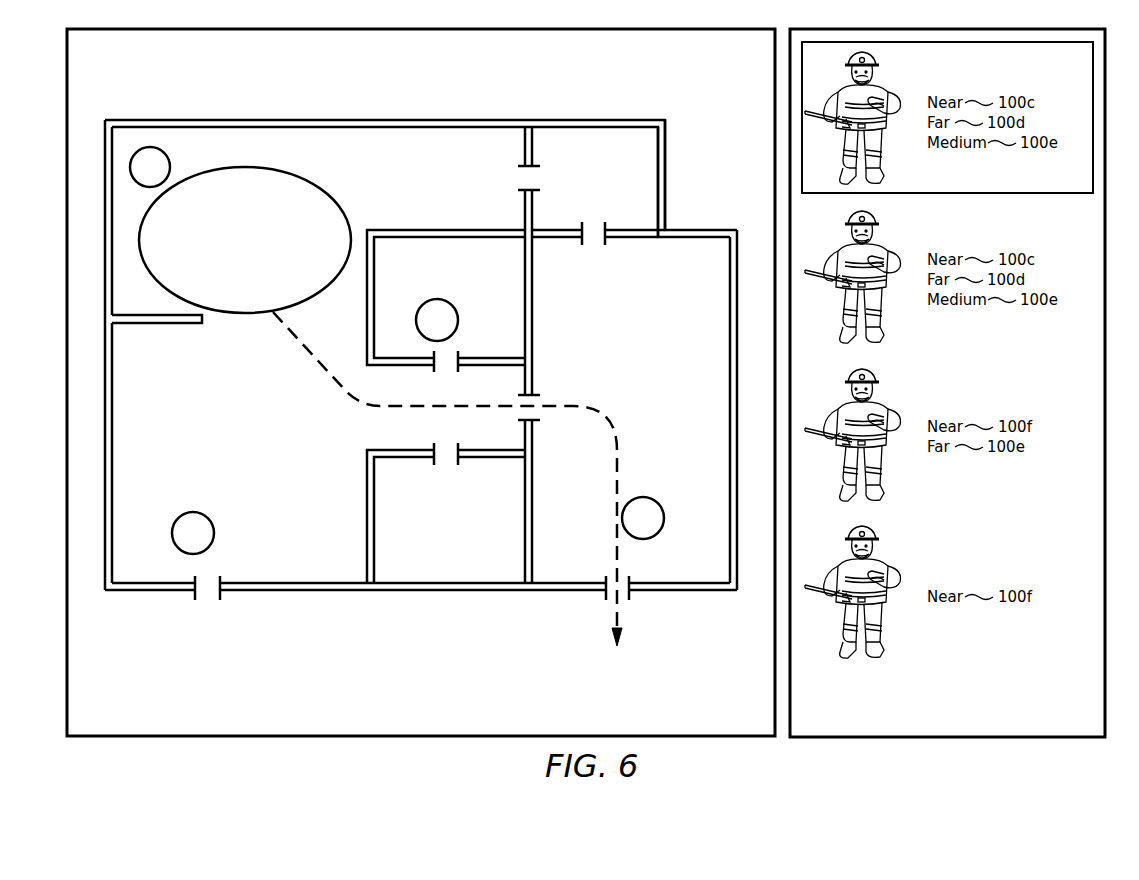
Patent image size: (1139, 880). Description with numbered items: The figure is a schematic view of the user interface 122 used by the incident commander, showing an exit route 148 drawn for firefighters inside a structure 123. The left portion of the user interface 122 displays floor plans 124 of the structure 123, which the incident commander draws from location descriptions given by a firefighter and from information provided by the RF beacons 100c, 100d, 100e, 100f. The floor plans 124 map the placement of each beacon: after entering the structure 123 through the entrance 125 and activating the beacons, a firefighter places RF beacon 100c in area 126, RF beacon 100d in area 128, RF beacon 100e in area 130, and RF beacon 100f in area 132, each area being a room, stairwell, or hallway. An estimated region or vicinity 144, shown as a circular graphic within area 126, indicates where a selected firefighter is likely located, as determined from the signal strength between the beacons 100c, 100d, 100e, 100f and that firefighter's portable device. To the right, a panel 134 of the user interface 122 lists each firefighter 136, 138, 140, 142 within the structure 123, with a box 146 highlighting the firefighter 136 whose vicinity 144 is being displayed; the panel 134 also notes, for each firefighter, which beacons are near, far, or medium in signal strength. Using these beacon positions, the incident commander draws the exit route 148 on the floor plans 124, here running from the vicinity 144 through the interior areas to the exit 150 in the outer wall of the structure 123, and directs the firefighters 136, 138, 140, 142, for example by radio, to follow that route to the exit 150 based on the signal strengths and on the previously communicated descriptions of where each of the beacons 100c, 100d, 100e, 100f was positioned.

The RF beacon 100c is at (165, 152).
The RF beacon 100d is at (208, 517).
The RF beacon 100e is at (453, 306).
The RF beacon 100f is at (659, 503).
The user interface 122 is at (396, 735).
The structure 123 is at (450, 592).
The floor plans 124 is at (423, 119).
The entrance 125 is at (203, 602).
The area 126 is at (326, 225).
The area 128 is at (411, 489).
The area 130 is at (449, 312).
The area 132 is at (614, 246).
The panel 134 is at (943, 736).
The firefighter 136 is at (883, 82).
The firefighter 138 is at (883, 241).
The firefighter 140 is at (883, 399).
The firefighter 142 is at (883, 556).
The vicinity 144 is at (338, 207).
The box 146 is at (1009, 194).
The exit route 148 is at (593, 417).
The exit 150 is at (630, 598).